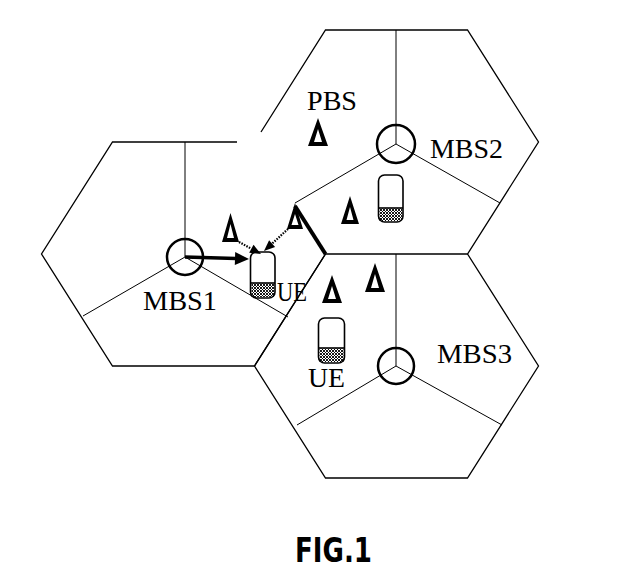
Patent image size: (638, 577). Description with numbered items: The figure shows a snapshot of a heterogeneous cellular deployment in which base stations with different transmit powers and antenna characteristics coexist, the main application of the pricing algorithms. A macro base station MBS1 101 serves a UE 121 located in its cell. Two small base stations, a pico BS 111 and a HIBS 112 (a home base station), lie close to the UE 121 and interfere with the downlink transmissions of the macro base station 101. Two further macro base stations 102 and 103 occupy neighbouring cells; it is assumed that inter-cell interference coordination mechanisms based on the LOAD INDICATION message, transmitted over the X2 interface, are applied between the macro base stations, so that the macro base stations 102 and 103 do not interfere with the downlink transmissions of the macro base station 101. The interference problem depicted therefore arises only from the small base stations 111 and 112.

The macro base station MBS1 101 is at (156, 242).
The macro base station 102 is at (415, 113).
The macro base station 103 is at (386, 390).
The pico BS 111 is at (208, 214).
The HIBS 112 is at (279, 202).
The UE 121 is at (252, 307).